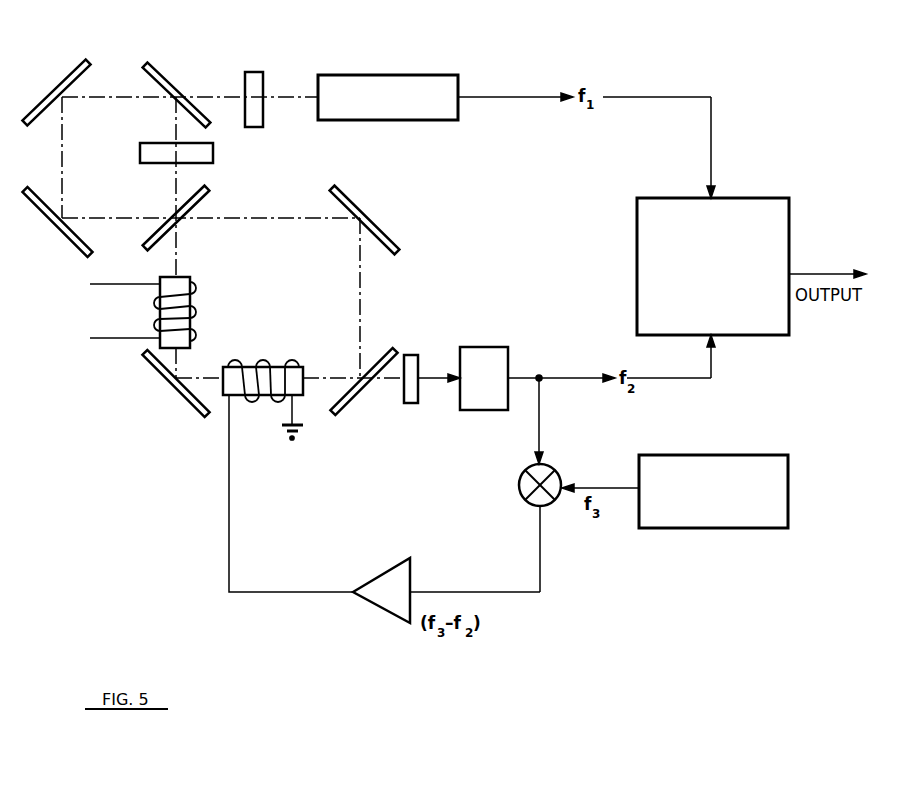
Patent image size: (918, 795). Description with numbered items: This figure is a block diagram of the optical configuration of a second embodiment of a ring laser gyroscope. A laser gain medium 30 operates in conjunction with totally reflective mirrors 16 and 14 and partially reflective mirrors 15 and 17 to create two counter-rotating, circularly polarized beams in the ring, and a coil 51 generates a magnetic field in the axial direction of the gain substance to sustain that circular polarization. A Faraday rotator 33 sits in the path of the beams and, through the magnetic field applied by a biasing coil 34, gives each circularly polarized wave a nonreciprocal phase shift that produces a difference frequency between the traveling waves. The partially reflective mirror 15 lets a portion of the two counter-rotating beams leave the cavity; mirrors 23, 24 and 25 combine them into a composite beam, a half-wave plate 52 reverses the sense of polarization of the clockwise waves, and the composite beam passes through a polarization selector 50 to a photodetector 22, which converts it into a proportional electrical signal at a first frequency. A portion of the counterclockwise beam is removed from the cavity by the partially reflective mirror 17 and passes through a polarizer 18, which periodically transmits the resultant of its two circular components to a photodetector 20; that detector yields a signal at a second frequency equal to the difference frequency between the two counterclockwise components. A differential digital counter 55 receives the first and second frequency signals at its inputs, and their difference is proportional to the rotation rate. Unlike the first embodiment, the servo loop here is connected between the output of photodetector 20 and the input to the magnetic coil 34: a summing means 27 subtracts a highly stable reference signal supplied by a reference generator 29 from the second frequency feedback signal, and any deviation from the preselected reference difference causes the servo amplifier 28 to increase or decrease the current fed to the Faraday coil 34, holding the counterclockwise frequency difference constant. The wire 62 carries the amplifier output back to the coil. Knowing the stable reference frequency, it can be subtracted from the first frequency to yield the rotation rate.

The totally reflective mirror 14 is at (163, 378).
The partially reflective mirror 15 is at (150, 245).
The totally reflective mirror 16 is at (362, 206).
The partially reflective mirror 17 is at (355, 395).
The polarizer 18 is at (412, 365).
The photodetector 20 is at (483, 368).
The photodetector 22 is at (405, 105).
The mirror 23 is at (68, 82).
The mirror 24 is at (47, 210).
The mirror 25 is at (178, 96).
The summing means 27 is at (524, 482).
The servo amplifier 28 is at (393, 595).
The reference generator 29 is at (700, 512).
The laser gain medium 30 is at (175, 295).
The Faraday rotator 33 is at (268, 380).
The biasing coil 34 is at (252, 398).
The polarization selector 50 is at (255, 82).
The coil 51 is at (157, 322).
The half-wave plate 52 is at (202, 152).
The differential digital counter 55 is at (750, 297).
The feedback wire 62 is at (258, 592).